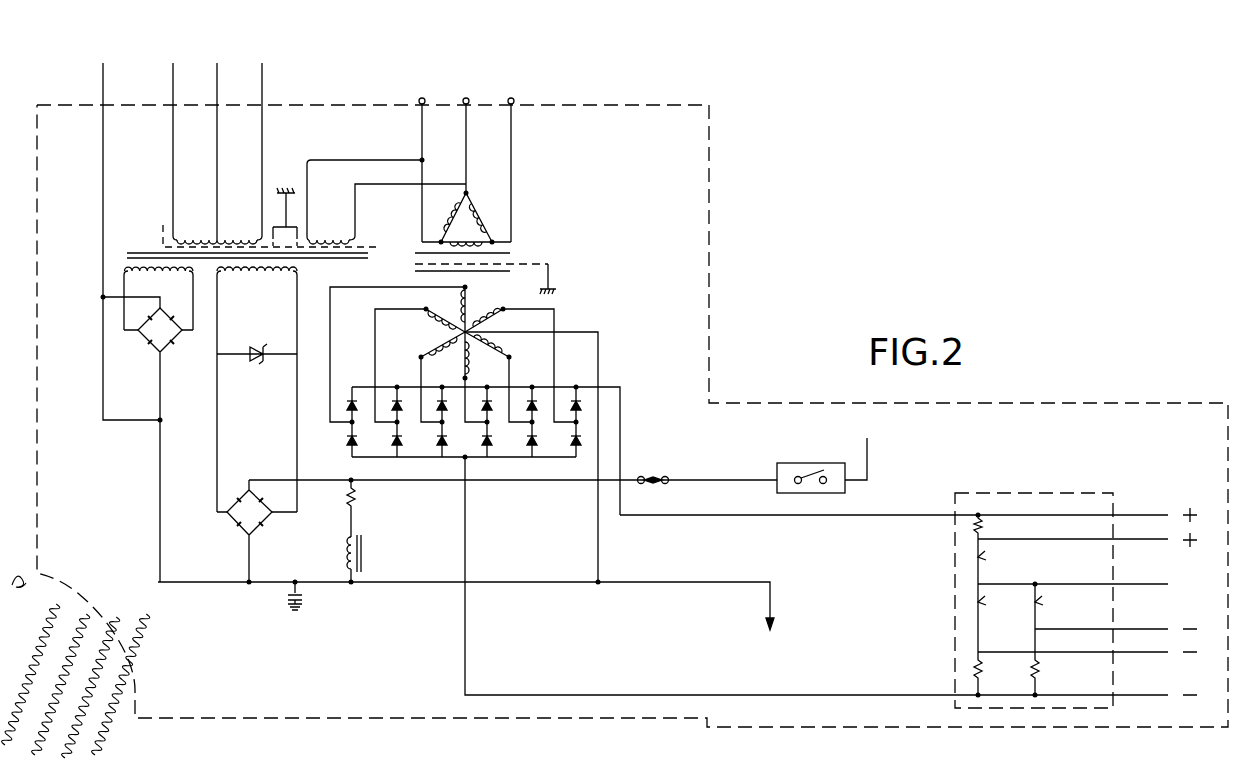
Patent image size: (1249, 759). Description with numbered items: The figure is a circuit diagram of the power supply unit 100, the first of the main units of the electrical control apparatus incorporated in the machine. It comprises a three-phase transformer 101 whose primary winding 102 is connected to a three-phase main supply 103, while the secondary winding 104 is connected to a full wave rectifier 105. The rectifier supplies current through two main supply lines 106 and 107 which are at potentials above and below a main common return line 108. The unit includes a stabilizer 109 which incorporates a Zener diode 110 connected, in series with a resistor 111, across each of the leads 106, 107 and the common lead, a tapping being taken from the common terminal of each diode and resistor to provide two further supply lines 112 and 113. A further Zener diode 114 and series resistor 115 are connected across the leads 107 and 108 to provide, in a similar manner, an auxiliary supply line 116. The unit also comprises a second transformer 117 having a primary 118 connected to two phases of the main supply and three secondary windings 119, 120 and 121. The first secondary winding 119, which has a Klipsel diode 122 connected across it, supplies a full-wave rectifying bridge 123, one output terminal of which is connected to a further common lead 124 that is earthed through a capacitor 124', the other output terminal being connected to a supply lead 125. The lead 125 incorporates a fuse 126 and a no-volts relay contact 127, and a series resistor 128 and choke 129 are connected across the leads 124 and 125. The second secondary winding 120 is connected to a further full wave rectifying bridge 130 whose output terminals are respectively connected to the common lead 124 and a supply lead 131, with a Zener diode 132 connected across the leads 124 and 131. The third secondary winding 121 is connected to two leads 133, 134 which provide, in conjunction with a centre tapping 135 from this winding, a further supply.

The power supply unit 100 is at (711, 299).
The three-phase transformer 101 is at (486, 270).
The primary winding 102 is at (472, 228).
The three-phase main supply 103 is at (509, 98).
The secondary winding 104 is at (492, 327).
The full wave rectifier 105 is at (498, 492).
The main supply line 106 is at (1150, 507).
The main supply line 107 is at (1124, 698).
The main common return line 108 is at (1148, 580).
The stabilizer 109 is at (1034, 589).
The Zener diode 110 is at (985, 556).
The resistor 111 is at (975, 522).
The supply line 112 is at (1087, 533).
The supply line 113 is at (1124, 655).
The Zener diode 114 is at (1046, 600).
The series resistor 115 is at (1040, 670).
The auxiliary supply line 116 is at (1151, 628).
The second transformer 117 is at (263, 223).
The primary 118 is at (330, 240).
The first secondary winding 119 is at (244, 282).
The second secondary winding 120 is at (143, 276).
The third secondary winding 121 is at (231, 240).
The Klipsel diode 122 is at (266, 364).
The full-wave rectifying bridge 123 is at (247, 518).
The common lead 124 is at (466, 596).
The capacitor 124' is at (329, 607).
The supply lead 125 is at (716, 478).
The fuse 126 is at (648, 476).
The no-volts relay contact 127 is at (811, 460).
The series resistor 128 is at (357, 498).
The choke 129 is at (363, 557).
The full wave rectifying bridge 130 is at (163, 336).
The supply lead 131 is at (103, 210).
The Zener diode 132 is at (96, 400).
The lead 133 is at (173, 140).
The lead 134 is at (262, 147).
The centre tapping 135 is at (217, 134).